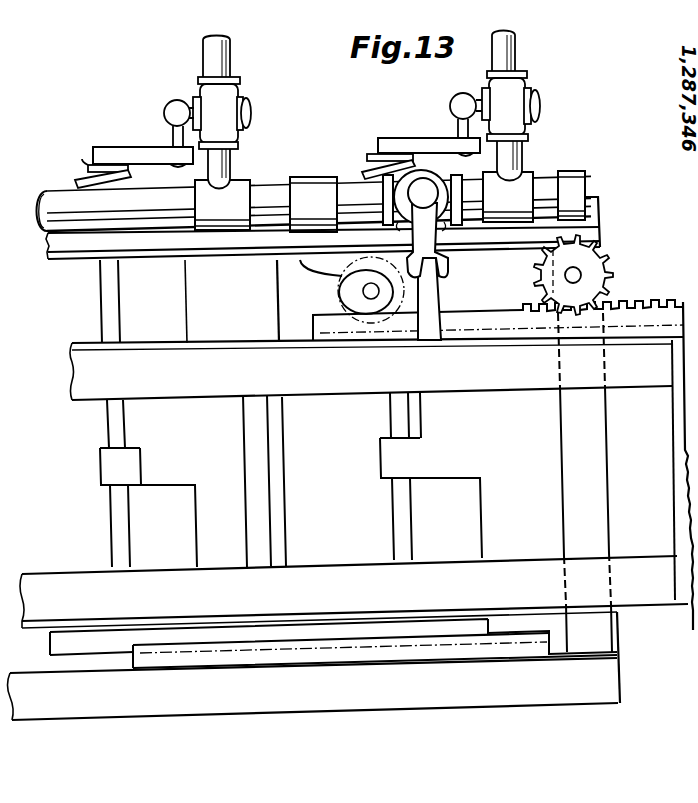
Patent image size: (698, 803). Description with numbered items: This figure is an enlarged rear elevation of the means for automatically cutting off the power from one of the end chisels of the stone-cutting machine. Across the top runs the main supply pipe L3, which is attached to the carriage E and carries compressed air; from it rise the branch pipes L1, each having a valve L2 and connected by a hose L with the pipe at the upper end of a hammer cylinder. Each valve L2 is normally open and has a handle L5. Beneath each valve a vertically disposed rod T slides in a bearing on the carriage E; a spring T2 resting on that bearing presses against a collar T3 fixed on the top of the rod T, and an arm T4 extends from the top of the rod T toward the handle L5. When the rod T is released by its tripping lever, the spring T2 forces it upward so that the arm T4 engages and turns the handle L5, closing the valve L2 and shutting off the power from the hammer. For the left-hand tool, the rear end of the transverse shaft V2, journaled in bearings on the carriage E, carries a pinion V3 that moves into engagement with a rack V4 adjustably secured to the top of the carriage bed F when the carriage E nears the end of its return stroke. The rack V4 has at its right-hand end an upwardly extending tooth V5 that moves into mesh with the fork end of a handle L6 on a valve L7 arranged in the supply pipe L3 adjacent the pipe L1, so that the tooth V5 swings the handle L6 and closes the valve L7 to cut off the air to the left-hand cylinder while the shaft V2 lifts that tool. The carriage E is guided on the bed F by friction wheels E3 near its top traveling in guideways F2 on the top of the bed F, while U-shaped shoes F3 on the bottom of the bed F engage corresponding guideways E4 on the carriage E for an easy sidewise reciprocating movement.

The hose L is at (210, 53).
The branch pipe L1 is at (232, 157).
The valve L2 is at (248, 110).
The main supply pipe L3 is at (62, 191).
The handle L5 is at (457, 125).
The handle L6 is at (448, 227).
The valve L7 is at (396, 226).
The rod T is at (112, 297).
The spring T2 is at (131, 173).
The collar T3 is at (380, 155).
The arm T4 is at (410, 134).
The carriage E is at (45, 250).
The friction wheels E3 is at (341, 293).
The guideways E4 is at (293, 658).
The bed F is at (315, 359).
The guideways F2 is at (323, 323).
The U-shaped shoes F3 is at (354, 592).
The shaft V2 is at (580, 268).
The pinion V3 is at (606, 276).
The rack V4 is at (637, 310).
The tooth V5 is at (437, 297).